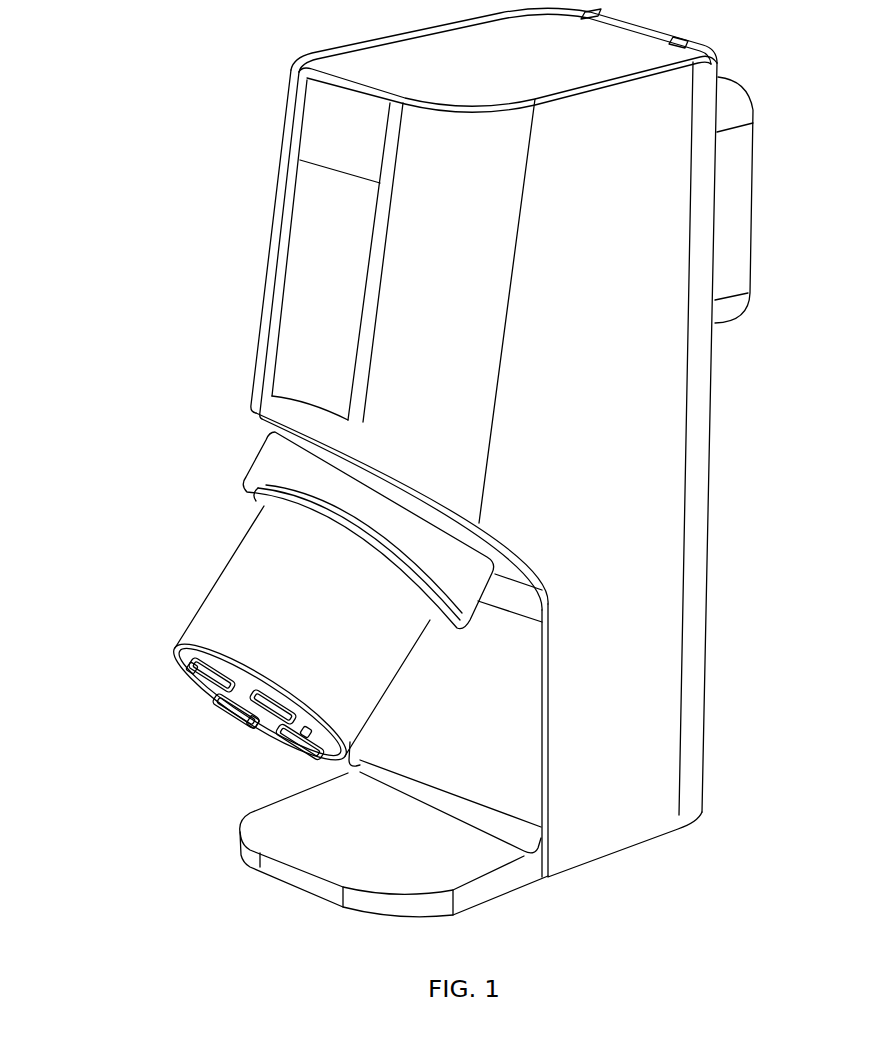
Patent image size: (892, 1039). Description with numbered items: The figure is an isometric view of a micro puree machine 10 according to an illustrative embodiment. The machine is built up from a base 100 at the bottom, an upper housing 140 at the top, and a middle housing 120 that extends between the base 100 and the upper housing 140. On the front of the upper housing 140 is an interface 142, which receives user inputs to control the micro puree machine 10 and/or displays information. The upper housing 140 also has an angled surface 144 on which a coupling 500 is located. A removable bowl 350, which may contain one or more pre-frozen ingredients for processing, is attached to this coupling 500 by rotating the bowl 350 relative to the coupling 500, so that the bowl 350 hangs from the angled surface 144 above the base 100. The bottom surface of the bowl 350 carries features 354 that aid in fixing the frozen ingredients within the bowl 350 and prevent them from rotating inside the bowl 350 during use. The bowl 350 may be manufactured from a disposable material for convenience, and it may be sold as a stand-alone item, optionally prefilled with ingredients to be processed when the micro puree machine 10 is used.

The micro puree machine 10 is at (108, 93).
The base 100 is at (268, 832).
The middle housing 120 is at (643, 645).
The upper housing 140 is at (677, 212).
The interface 142 is at (290, 322).
The angled surface 144 is at (265, 430).
The removable bowl 350 is at (255, 568).
The features 354 is at (250, 718).
The coupling 500 is at (268, 478).